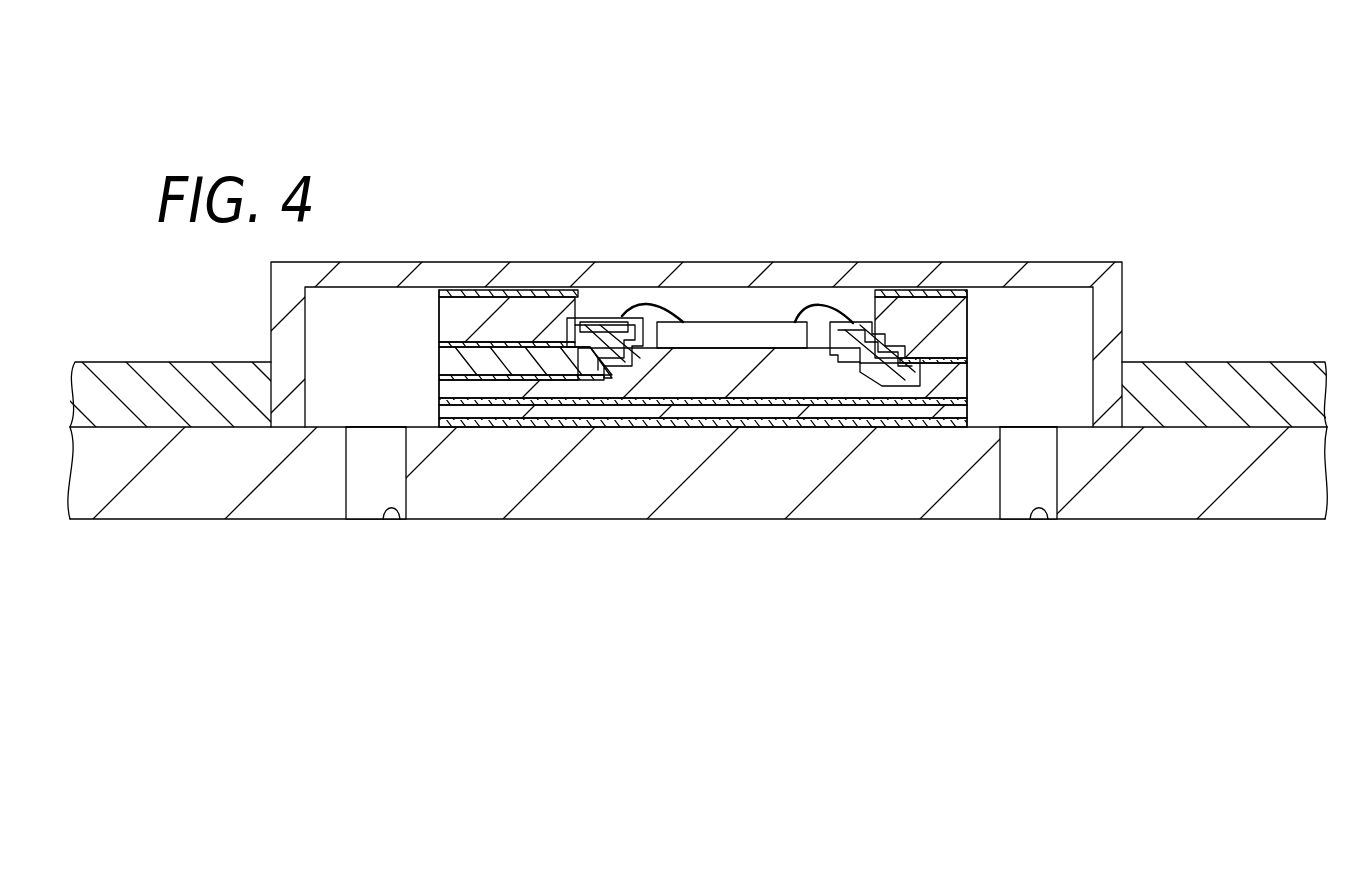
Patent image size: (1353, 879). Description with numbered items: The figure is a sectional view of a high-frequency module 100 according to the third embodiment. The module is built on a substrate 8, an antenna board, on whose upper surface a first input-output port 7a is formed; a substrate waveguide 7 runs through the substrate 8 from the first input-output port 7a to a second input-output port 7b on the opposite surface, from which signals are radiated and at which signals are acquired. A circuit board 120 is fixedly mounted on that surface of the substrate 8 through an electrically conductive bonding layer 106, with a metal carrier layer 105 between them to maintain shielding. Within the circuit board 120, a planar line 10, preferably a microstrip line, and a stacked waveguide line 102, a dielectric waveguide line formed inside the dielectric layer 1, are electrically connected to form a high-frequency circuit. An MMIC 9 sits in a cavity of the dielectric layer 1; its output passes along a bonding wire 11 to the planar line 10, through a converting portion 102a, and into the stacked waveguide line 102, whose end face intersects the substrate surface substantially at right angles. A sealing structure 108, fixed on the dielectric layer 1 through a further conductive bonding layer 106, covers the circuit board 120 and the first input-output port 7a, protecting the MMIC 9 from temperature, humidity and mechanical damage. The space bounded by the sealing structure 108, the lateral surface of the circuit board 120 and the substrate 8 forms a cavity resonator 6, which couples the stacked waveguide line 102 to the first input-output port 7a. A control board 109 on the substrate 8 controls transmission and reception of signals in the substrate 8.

The high-frequency module 100 is at (1108, 52).
The sealing structure 108 is at (378, 278).
The electrically conductive bonding layer 106 is at (532, 290).
The converting portion 102a is at (592, 318).
The planar line 10 is at (598, 318).
The bonding wire 11 is at (640, 303).
The MMIC 9 is at (760, 327).
The dielectric layer 1 is at (900, 307).
The cavity resonator 6 is at (1025, 308).
The control board 109 is at (1258, 375).
The stacked waveguide line 102 is at (440, 357).
The circuit board 120 is at (387, 362).
The metal carrier layer 105 is at (440, 416).
The first input-output port 7a is at (377, 428).
The substrate waveguide 7 is at (377, 492).
The second input-output port 7b is at (397, 521).
The substrate 8 is at (703, 500).